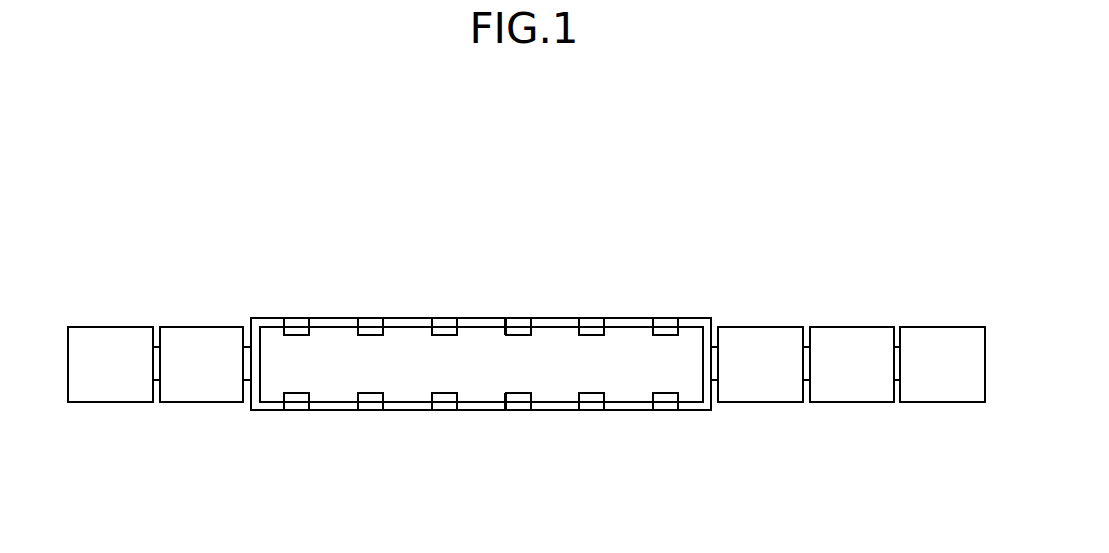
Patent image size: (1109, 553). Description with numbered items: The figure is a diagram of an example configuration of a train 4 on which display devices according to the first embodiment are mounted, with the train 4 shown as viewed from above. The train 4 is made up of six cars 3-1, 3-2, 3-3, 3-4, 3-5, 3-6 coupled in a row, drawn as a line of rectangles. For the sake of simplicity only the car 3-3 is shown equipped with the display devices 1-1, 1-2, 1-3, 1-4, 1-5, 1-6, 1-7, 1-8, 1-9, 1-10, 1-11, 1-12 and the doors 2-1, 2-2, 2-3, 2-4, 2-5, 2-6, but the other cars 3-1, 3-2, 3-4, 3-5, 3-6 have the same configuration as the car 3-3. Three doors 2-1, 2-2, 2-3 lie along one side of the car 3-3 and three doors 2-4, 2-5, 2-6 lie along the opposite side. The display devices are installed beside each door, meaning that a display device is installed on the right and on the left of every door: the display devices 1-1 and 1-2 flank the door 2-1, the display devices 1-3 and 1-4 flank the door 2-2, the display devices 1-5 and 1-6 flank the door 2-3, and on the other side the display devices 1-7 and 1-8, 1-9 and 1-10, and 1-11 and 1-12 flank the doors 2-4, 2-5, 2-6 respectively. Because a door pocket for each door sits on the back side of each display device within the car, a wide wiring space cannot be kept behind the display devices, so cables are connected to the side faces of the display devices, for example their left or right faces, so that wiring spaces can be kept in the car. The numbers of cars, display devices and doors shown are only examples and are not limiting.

The display device 1-1 is at (287, 336).
The display device 1-2 is at (389, 336).
The display device 1-3 is at (439, 336).
The display device 1-4 is at (537, 336).
The display device 1-5 is at (585, 336).
The display device 1-6 is at (684, 336).
The display device 1-7 is at (288, 392).
The display device 1-8 is at (387, 392).
The display device 1-9 is at (436, 392).
The display device 1-10 is at (534, 392).
The display device 1-11 is at (584, 392).
The display device 1-12 is at (683, 392).
The door 2-1 is at (330, 318).
The door 2-2 is at (479, 318).
The door 2-3 is at (628, 318).
The door 2-4 is at (330, 410).
The door 2-5 is at (478, 410).
The door 2-6 is at (627, 410).
The car 3-1 is at (110, 327).
The car 3-2 is at (201, 327).
The car 3-3 is at (698, 318).
The car 3-4 is at (759, 327).
The car 3-5 is at (850, 327).
The car 3-6 is at (940, 327).
The train 4 is at (792, 167).